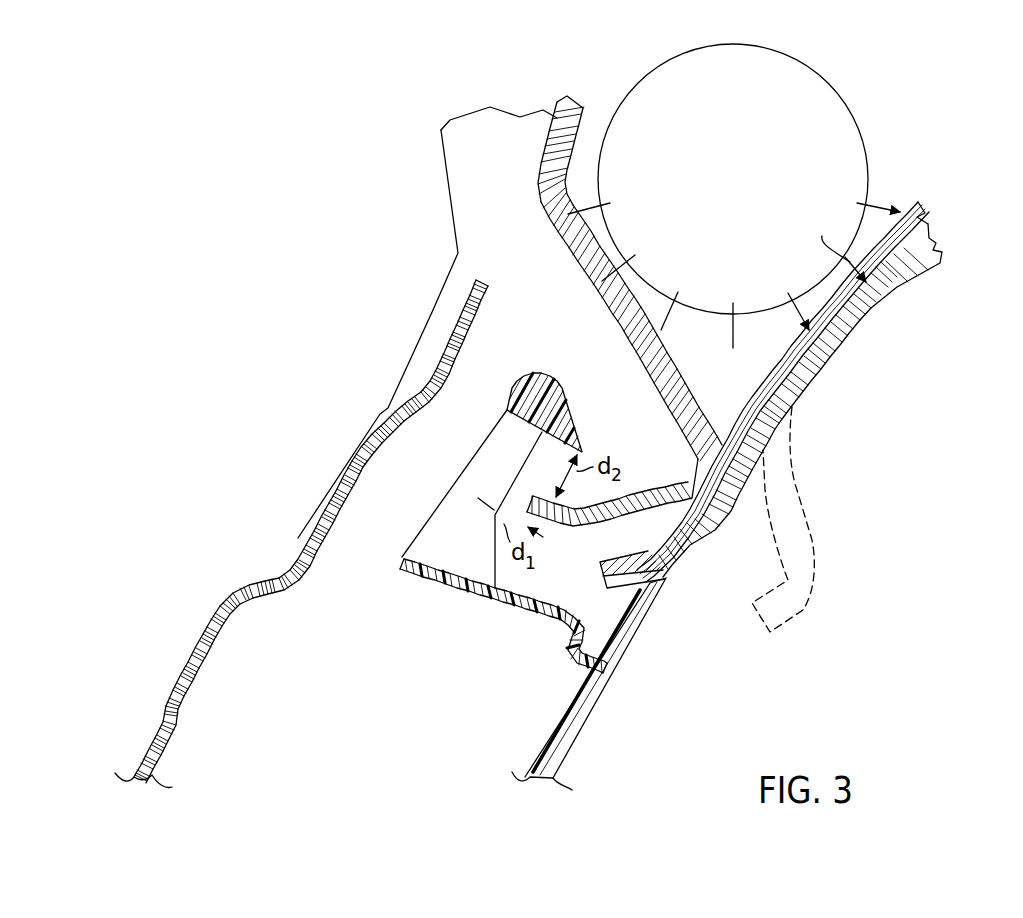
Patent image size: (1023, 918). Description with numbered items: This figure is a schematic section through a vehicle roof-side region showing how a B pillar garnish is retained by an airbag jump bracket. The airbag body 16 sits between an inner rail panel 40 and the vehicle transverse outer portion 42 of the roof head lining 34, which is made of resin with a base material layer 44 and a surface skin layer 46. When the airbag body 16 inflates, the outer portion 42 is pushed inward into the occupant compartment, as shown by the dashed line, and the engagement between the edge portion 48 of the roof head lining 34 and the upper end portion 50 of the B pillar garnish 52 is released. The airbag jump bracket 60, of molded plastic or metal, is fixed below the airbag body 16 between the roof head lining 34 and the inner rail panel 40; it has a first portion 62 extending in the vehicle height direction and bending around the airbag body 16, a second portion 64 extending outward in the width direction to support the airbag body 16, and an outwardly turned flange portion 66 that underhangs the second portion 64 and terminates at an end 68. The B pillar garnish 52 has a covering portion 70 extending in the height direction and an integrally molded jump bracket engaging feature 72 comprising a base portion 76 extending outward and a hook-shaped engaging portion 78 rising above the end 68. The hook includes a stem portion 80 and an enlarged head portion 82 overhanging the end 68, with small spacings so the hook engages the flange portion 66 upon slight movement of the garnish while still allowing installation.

The airbag body 16 is at (838, 124).
The roof head lining 34 is at (814, 386).
The inner rail panel 40 is at (445, 196).
The vehicle transverse outer portion 42 is at (884, 399).
The base material layer 44 is at (924, 212).
The surface skin layer 46 is at (940, 241).
The edge portion 48 is at (633, 574).
The upper end portion 50 is at (627, 630).
The B pillar garnish 52 is at (560, 712).
The airbag jump bracket 60 is at (518, 86).
The first portion 62 is at (547, 148).
The second portion 64 is at (560, 222).
The outwardly turned flange portion 66 is at (660, 487).
The end 68 is at (540, 495).
The covering portion 70 is at (580, 732).
The jump bracket engaging feature 72 is at (458, 375).
The base portion 76 is at (465, 598).
The hook-shaped engaging portion 78 is at (381, 489).
The stem portion 80 is at (416, 540).
The enlarged head portion 82 is at (569, 386).